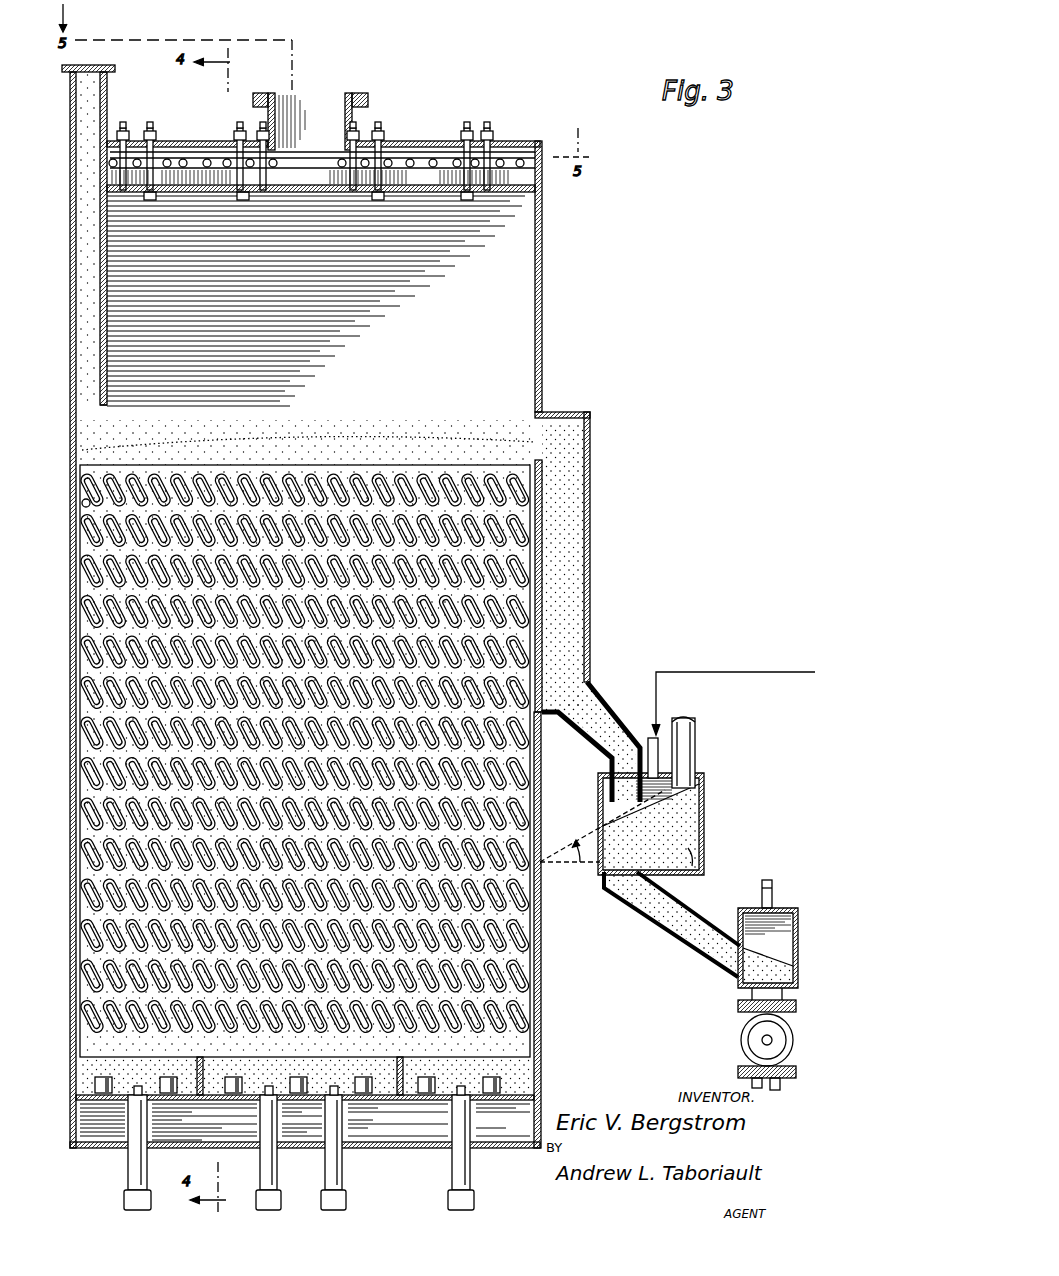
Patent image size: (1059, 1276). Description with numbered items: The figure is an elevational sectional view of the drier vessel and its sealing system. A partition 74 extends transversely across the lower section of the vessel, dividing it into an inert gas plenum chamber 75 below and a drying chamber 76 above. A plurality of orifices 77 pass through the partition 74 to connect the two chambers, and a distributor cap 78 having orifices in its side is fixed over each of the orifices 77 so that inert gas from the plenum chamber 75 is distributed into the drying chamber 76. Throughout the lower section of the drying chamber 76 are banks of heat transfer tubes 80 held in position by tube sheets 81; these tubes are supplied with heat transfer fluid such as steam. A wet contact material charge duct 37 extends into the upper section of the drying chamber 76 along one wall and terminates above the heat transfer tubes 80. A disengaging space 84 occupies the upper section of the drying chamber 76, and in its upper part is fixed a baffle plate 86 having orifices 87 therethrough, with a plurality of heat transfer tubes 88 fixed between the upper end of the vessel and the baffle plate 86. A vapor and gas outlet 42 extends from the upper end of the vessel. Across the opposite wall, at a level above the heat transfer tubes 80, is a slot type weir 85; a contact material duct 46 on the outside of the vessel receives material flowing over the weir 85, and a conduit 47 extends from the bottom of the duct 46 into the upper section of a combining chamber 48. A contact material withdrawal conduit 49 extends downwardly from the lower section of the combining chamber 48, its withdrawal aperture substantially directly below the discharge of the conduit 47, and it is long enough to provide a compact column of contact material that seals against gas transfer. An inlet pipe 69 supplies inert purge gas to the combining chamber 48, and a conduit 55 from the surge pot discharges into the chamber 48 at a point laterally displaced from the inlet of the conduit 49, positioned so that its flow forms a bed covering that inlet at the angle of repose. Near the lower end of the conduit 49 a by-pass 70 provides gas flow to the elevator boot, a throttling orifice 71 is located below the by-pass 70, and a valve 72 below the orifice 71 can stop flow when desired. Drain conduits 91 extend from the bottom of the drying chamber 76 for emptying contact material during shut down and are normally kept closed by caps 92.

The wet contact material charge duct 37 is at (74, 88).
The vapor and gas outlet 42 is at (370, 100).
The disengaging space 84 is at (542, 290).
The slot type weir 85 is at (535, 430).
The baffle plate 86 is at (352, 192).
The orifices 87 is at (316, 192).
The heat transfer tubes 88 is at (243, 152).
The contact material duct 46 is at (590, 552).
The conduit 47 is at (592, 718).
The combining chamber 48 is at (705, 826).
The contact material withdrawal conduit 49 is at (668, 922).
The conduit 55 is at (698, 730).
The inlet pipe 69 is at (646, 745).
The by-pass 70 is at (773, 892).
The throttling orifice 71 is at (737, 1004).
The valve 72 is at (740, 1040).
The partition 74 is at (212, 1100).
The inert gas plenum chamber 75 is at (70, 1122).
The drying chamber 76 is at (70, 882).
The orifices 77 is at (104, 1095).
The distributor cap 78 is at (300, 1088).
The heat transfer tubes 80 is at (133, 498).
The tube sheets 81 is at (108, 632).
The drain conduits 91 is at (324, 1164).
The caps 92 is at (322, 1200).